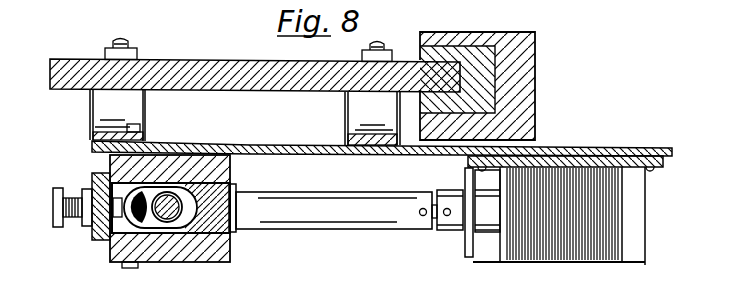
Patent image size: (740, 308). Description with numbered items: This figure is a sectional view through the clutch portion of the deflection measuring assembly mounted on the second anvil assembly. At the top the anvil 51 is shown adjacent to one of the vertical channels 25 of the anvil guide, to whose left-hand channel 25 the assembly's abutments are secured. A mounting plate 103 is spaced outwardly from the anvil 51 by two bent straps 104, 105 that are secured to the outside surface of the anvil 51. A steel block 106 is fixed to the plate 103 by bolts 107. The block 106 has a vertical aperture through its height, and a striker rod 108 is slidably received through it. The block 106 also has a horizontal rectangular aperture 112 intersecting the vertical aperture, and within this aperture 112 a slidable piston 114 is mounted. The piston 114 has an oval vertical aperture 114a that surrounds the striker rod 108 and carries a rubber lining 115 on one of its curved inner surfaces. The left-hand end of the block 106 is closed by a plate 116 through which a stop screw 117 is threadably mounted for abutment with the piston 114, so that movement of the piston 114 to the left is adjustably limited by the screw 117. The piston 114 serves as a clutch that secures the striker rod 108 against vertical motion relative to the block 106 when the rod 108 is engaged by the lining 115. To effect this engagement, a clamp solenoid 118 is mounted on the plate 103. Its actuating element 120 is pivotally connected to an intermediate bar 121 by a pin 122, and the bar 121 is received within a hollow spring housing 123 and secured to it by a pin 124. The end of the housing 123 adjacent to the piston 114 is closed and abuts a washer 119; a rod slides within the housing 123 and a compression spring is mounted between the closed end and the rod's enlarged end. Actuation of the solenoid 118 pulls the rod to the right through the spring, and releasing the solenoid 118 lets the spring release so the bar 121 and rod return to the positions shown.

The channel 25 is at (538, 124).
The anvil 51 is at (204, 60).
The mounting plate 103 is at (266, 146).
The bent strap 104 is at (90, 120).
The bent strap 105 is at (349, 121).
The steel block 106 is at (200, 263).
The bolt 107 is at (143, 130).
The striker rod 108 is at (220, 180).
The horizontal rectangular aperture 112 is at (222, 240).
The slidable piston 114 is at (125, 228).
The oval vertical aperture 114a is at (160, 232).
The rubber lining 115 is at (130, 197).
The plate 116 is at (93, 236).
The stop screw 117 is at (53, 206).
The clamp solenoid 118 is at (558, 266).
The washer 119 is at (238, 191).
The actuating element 120 is at (460, 237).
The intermediate bar 121 is at (435, 187).
The pin 122 is at (447, 208).
The spring housing 123 is at (345, 230).
The pin 124 is at (423, 216).